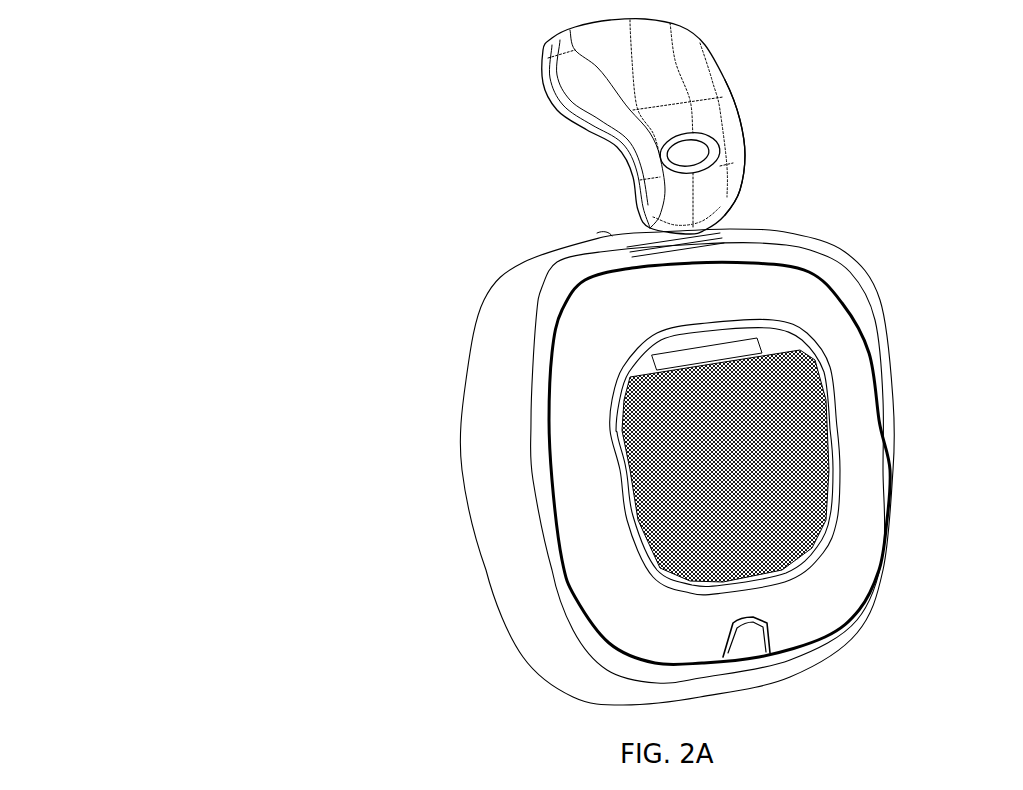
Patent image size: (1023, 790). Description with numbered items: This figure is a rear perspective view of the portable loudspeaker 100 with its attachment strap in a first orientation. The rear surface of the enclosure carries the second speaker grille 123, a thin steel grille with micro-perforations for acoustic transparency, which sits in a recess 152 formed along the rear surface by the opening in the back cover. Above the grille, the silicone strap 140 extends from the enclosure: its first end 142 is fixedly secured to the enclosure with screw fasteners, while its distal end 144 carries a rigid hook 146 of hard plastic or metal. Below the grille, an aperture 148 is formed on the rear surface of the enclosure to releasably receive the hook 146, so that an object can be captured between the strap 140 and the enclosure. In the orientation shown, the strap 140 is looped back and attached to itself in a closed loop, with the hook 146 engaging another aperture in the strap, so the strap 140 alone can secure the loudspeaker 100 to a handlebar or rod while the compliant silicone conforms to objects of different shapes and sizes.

The loudspeaker 100 is at (262, 84).
The strap 140 is at (703, 80).
The first end 142 is at (595, 233).
The distal end 144 is at (755, 174).
The hook 146 is at (697, 153).
The aperture 148 is at (765, 658).
The recess 152 is at (843, 418).
The second speaker grille 123 is at (810, 486).